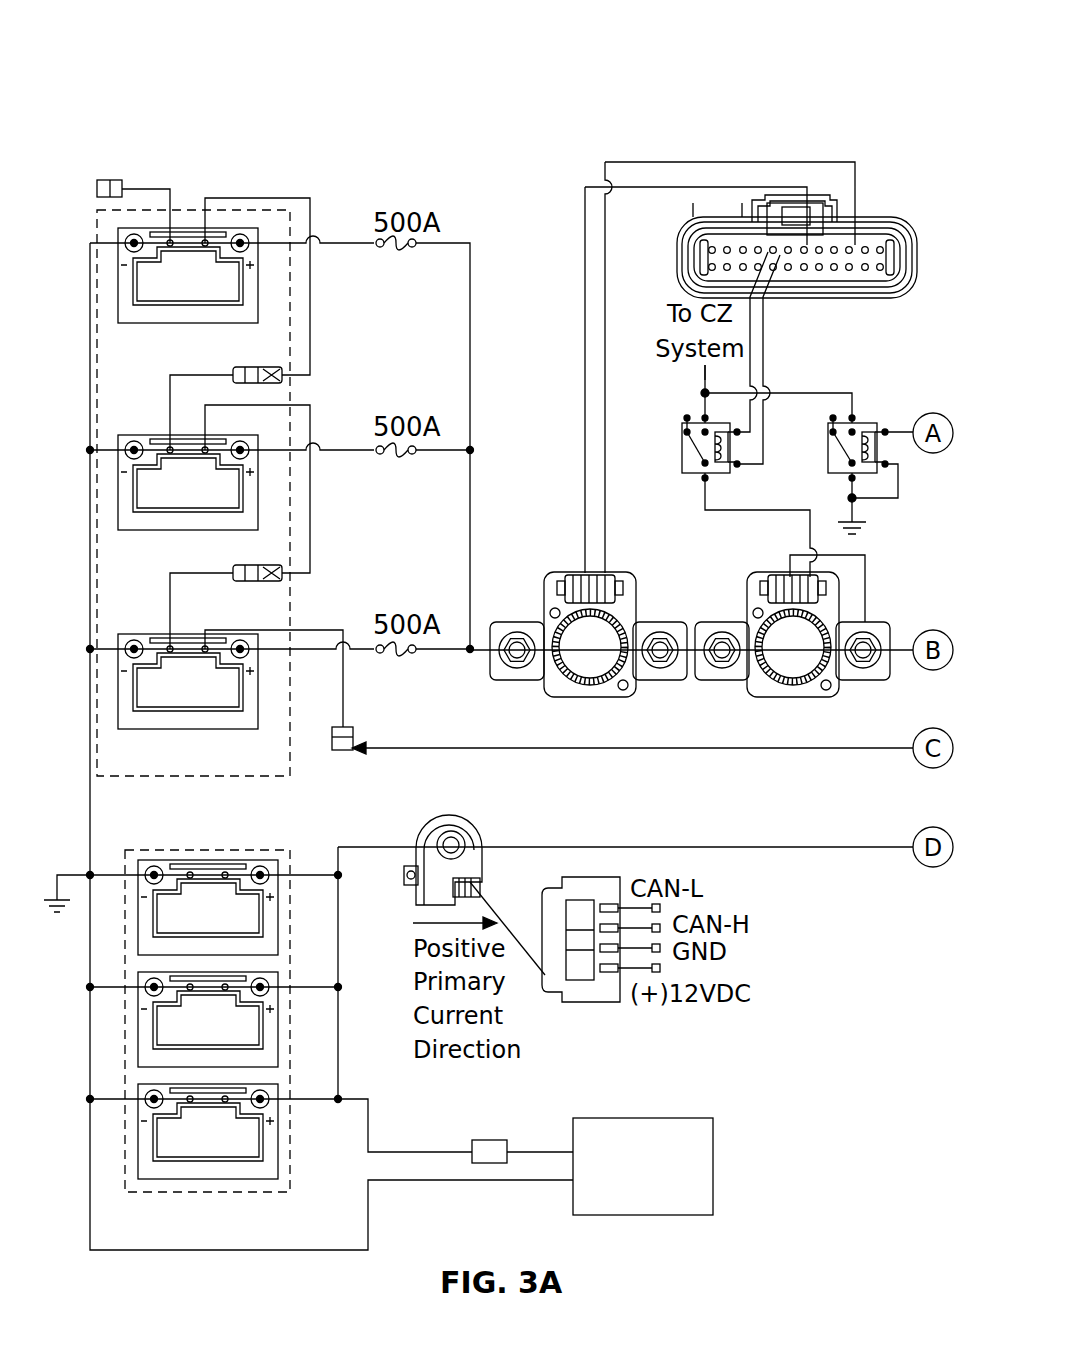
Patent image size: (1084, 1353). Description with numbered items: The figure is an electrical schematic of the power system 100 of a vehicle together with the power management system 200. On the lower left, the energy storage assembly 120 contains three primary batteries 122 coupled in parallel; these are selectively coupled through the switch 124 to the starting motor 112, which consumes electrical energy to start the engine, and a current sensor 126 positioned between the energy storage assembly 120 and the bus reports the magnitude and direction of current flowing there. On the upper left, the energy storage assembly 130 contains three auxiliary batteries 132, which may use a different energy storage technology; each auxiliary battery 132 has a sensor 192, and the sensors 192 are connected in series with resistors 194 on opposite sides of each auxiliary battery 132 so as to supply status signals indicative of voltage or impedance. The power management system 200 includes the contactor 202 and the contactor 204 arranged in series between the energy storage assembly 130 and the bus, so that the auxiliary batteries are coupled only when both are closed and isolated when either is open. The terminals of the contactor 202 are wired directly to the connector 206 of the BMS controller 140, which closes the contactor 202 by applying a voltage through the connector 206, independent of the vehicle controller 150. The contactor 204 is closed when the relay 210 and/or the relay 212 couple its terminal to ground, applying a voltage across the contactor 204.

The power system 100 is at (216, 36).
The power management system 200 is at (680, 78).
The starting motor 112 is at (640, 1118).
The energy storage assembly 120 is at (255, 851).
The primary batteries 122 is at (205, 860).
The switch 124 is at (490, 1140).
The current sensor 126 is at (475, 830).
The energy storage assembly 130 is at (272, 208).
The auxiliary batteries 132 is at (258, 263).
The BMS controller 140 is at (882, 307).
The vehicle controller 150 is at (705, 393).
The sensor 192 is at (193, 238).
The resistors 194 is at (100, 180).
The contactor 202 is at (636, 612).
The contactor 204 is at (842, 690).
The connector 206 is at (860, 216).
The relay 210 is at (690, 474).
The relay 212 is at (828, 466).